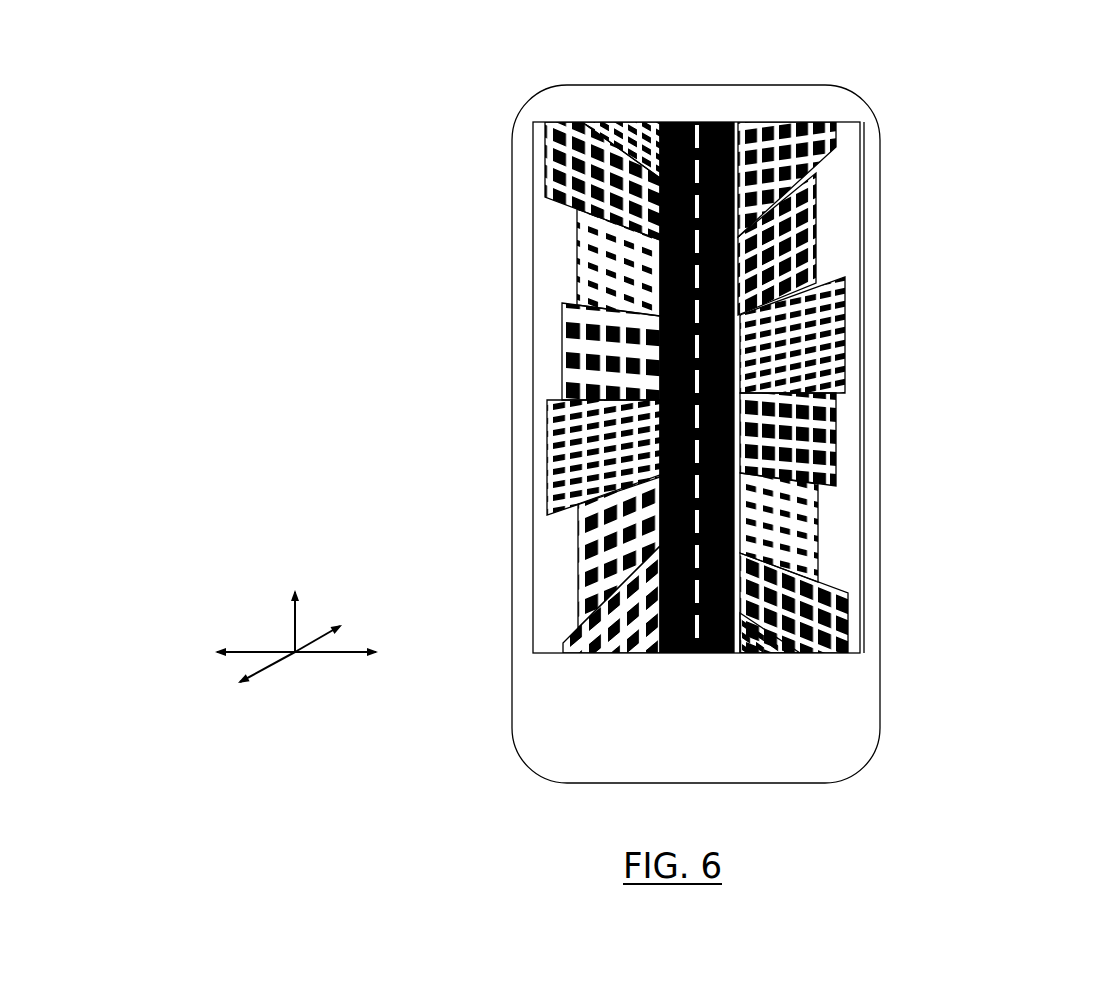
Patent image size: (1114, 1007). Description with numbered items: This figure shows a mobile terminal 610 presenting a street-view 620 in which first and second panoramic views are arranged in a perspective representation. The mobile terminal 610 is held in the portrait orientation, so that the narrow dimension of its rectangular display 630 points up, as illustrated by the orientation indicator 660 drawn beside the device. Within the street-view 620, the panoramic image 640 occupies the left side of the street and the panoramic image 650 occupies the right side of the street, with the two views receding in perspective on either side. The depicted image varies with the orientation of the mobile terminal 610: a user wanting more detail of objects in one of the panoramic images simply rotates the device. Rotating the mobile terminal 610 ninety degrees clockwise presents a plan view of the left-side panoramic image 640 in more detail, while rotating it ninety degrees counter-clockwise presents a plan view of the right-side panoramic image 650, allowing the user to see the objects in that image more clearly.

The mobile terminal 610 is at (513, 230).
The street-view 620 is at (835, 215).
The rectangular display 630 is at (693, 127).
The panoramic image 640 is at (578, 391).
The panoramic image 650 is at (760, 447).
The orientation indicator 660 is at (287, 645).